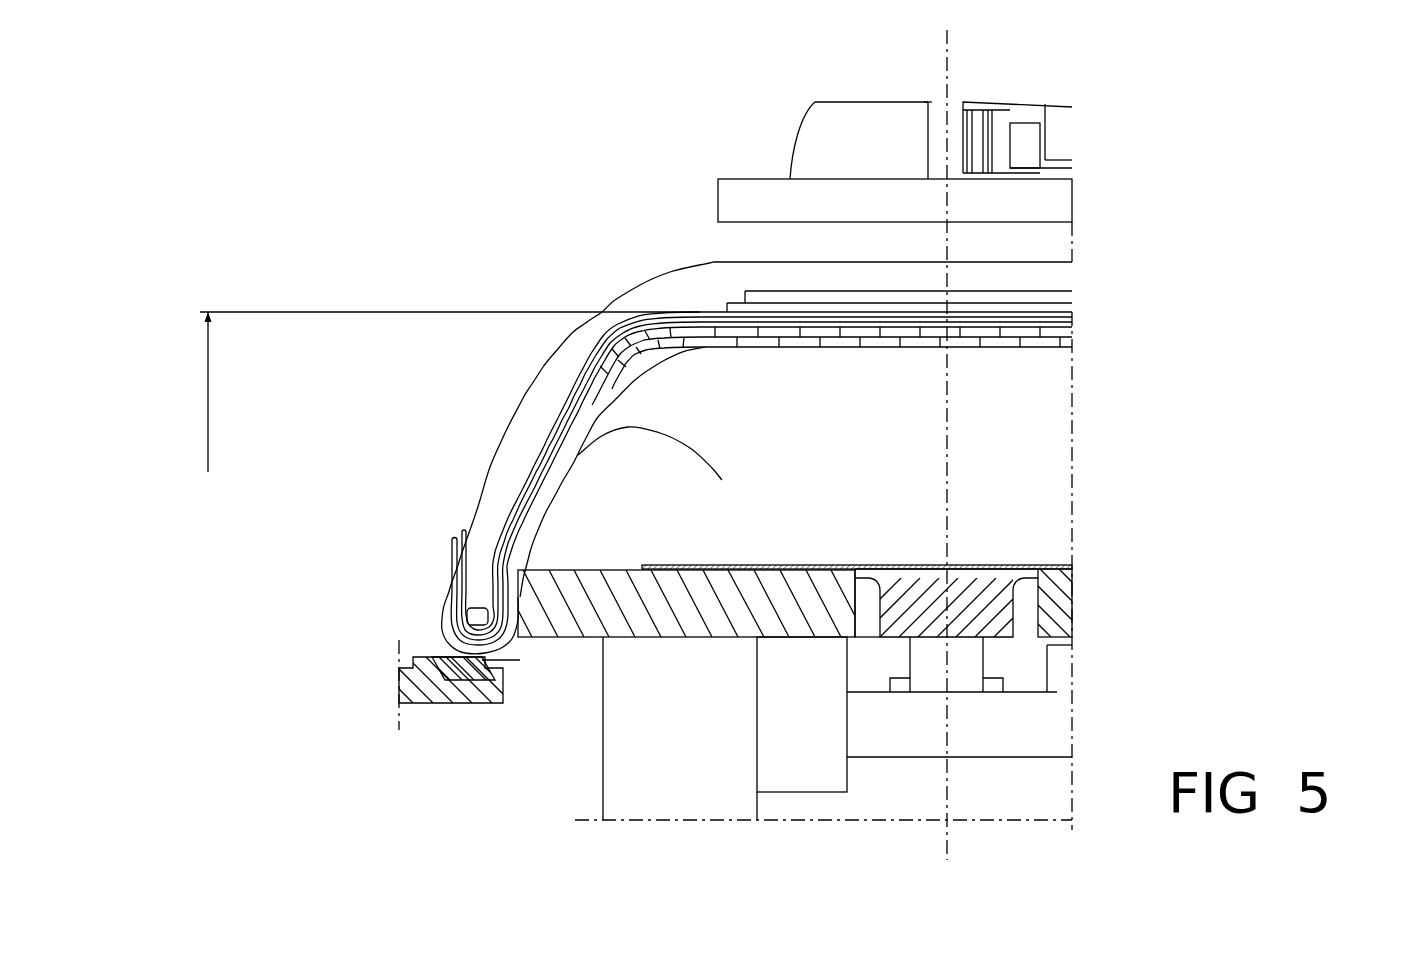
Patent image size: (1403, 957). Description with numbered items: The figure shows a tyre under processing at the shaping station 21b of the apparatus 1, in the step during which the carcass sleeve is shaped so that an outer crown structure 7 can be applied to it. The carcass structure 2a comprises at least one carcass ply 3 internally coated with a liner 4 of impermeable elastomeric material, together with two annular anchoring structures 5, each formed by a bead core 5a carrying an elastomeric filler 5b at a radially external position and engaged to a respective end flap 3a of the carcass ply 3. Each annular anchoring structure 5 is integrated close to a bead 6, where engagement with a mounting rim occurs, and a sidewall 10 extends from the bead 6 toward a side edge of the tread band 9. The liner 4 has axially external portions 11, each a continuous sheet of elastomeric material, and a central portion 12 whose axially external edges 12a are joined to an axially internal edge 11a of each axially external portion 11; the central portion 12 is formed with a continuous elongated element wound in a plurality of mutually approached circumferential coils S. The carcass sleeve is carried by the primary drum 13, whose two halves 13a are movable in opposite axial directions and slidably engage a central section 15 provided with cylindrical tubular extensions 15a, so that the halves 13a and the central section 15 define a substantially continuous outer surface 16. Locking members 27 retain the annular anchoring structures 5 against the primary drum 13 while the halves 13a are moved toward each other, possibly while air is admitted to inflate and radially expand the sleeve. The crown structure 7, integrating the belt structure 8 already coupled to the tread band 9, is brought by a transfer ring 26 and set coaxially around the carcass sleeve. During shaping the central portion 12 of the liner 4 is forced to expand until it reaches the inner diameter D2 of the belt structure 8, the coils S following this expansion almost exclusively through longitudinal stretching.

The apparatus 1 is at (612, 263).
The shaping station 21b is at (355, 178).
The carcass structure 2a is at (517, 412).
The carcass ply 3 is at (591, 379).
The end flaps of the carcass ply 3a is at (507, 520).
The liner 4 is at (758, 337).
The annular anchoring structure 5 is at (470, 575).
The bead core 5a is at (480, 548).
The elastomeric filler 5b is at (492, 550).
The bead 6 is at (437, 600).
The crown structure 7 is at (1074, 276).
The belt structure 8 is at (826, 293).
The tread band 9 is at (913, 280).
The sidewall 10 is at (550, 387).
The axially external portion of the liner 11 is at (550, 482).
The axially internal edge of the axially external portion 11a is at (636, 362).
The central portion of the liner 12 is at (805, 345).
The axially external edge of the central portion 12a is at (632, 348).
The primary drum 13 is at (1088, 625).
The half of the primary drum 13a is at (1054, 598).
The central section 15 is at (987, 595).
The cylindrical tubular extension 15a is at (782, 566).
The outer surface 16 is at (584, 566).
The transfer ring 26 is at (756, 192).
The locking member 27 is at (443, 690).
The circumferential coils S is at (867, 345).
The inner diameter of the belt structure D2 is at (421, 392).